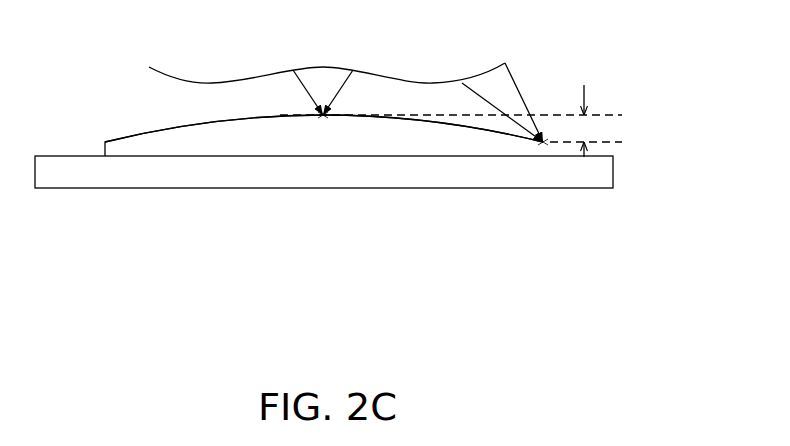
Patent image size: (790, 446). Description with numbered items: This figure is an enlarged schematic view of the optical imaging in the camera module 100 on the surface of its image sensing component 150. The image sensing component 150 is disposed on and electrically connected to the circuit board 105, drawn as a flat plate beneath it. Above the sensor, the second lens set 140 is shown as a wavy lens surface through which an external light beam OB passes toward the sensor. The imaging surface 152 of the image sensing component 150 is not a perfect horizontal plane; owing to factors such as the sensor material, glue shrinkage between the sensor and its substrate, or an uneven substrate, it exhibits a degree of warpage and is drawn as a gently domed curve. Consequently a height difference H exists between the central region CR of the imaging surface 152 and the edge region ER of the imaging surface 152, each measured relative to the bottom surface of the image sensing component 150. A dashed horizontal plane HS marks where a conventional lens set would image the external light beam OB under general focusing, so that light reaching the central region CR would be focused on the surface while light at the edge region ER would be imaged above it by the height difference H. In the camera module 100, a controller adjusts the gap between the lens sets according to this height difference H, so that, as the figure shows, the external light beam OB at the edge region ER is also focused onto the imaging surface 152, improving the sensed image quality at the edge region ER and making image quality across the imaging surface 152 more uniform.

The camera module 100 is at (632, 322).
The circuit board 105 is at (598, 177).
The second lens set 140 is at (455, 66).
The image sensing component 150 is at (145, 141).
The imaging surface 152 is at (190, 122).
The external light beam OB is at (342, 89).
The central region CR is at (323, 116).
The edge region ER is at (545, 145).
The horizontal plane HS is at (606, 114).
The height difference H is at (575, 121).